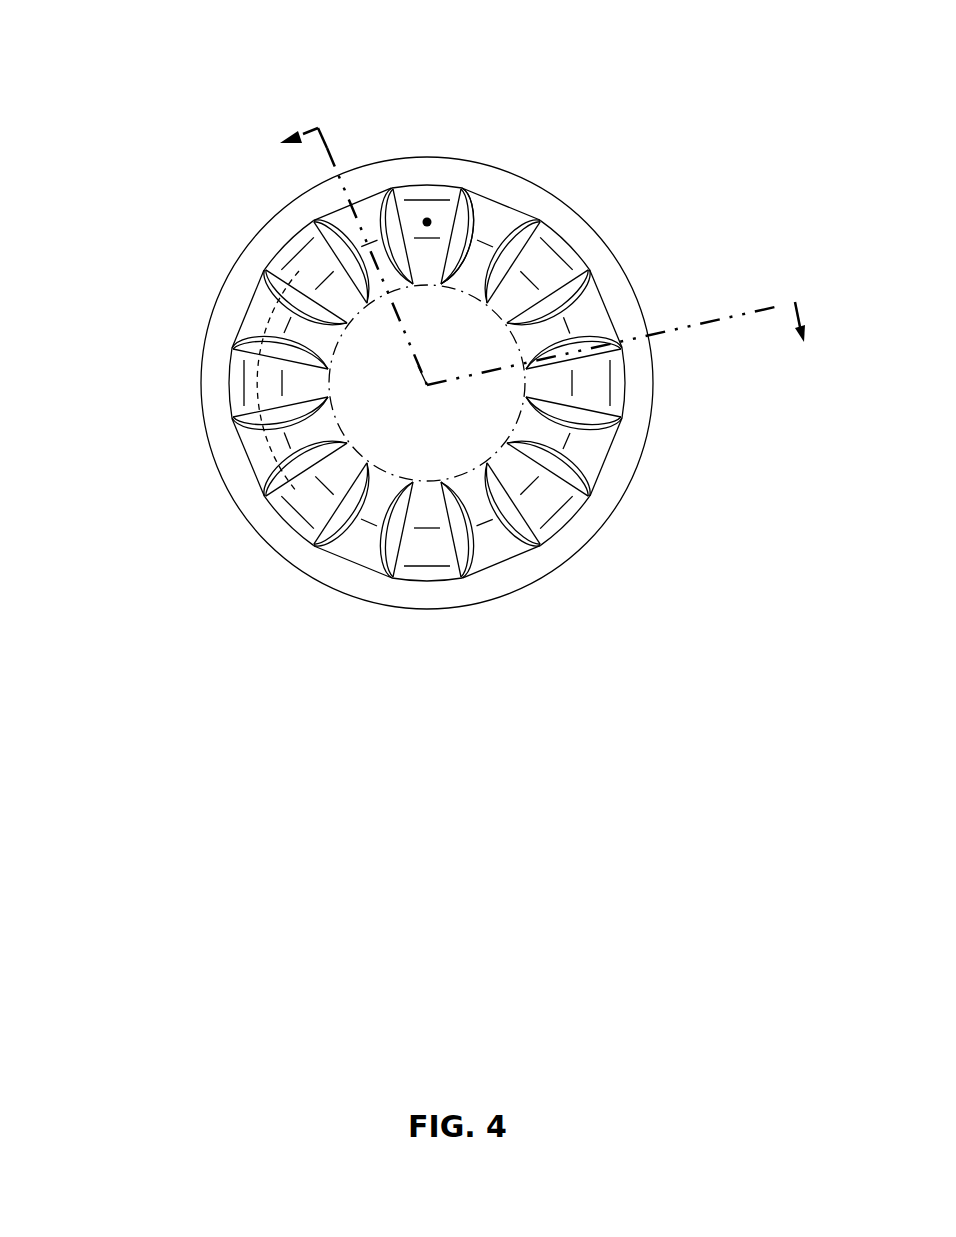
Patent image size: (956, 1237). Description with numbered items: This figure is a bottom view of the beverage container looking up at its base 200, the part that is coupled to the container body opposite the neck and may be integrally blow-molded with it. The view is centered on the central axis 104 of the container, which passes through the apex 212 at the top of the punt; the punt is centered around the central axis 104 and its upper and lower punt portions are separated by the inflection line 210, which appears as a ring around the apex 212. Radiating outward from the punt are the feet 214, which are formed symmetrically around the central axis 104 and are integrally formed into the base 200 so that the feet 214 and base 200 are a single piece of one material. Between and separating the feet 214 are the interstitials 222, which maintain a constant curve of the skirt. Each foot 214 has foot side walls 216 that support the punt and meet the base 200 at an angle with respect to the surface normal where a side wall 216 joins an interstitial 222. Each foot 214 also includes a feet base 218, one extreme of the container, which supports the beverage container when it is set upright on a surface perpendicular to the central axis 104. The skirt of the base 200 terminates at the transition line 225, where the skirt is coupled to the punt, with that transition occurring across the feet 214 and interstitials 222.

The base 200 is at (199, 68).
The inflection line 210 is at (522, 212).
The apex 212 is at (427, 385).
The central axis 104 is at (558, 397).
The feet 214 is at (427, 220).
The foot side walls 216 is at (479, 222).
The feet base 218 is at (428, 221).
The interstitials 222 is at (370, 238).
The transition line 225 is at (236, 392).